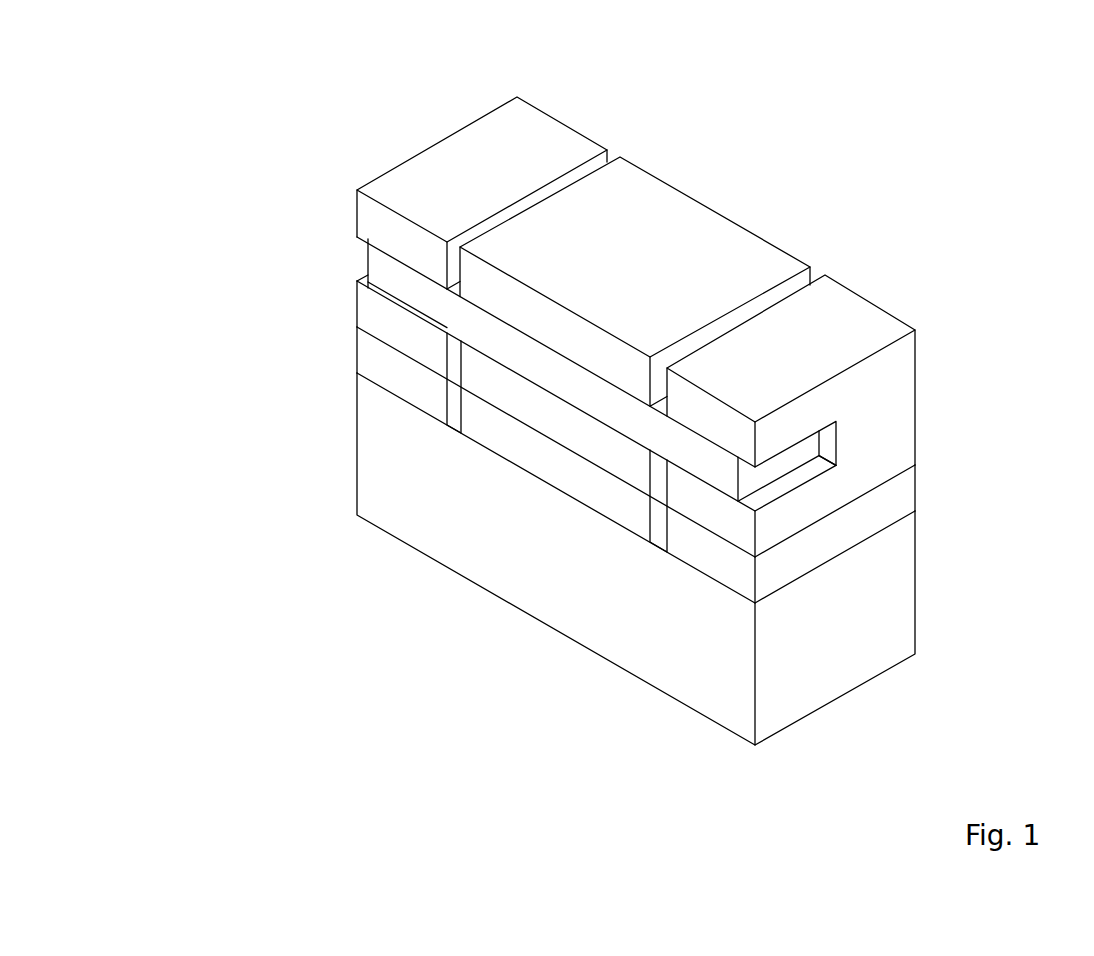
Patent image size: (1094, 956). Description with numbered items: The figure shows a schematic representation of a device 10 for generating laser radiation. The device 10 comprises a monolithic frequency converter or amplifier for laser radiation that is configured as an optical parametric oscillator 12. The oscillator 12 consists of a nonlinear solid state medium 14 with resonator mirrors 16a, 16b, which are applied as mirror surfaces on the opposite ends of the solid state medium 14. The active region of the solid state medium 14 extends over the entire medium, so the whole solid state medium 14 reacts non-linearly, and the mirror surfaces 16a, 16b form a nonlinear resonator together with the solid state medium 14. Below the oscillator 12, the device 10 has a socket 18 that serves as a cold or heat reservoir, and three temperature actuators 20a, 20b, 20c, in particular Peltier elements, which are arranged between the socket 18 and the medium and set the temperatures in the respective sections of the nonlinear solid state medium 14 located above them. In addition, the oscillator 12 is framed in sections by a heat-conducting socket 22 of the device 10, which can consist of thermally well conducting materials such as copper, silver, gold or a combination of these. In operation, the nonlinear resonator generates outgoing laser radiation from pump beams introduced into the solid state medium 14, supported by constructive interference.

The device for generating laser radiation 10 is at (830, 200).
The optical parametric oscillator 12 is at (158, 428).
The nonlinear solid state medium 14 is at (435, 305).
The resonator mirror 16a is at (370, 265).
The resonator mirror 16b is at (762, 482).
The socket 18 is at (890, 623).
The temperature actuator 20a is at (422, 400).
The temperature actuator 20b is at (537, 467).
The temperature actuator 20c is at (890, 515).
The heat-conducting socket 22 is at (890, 388).